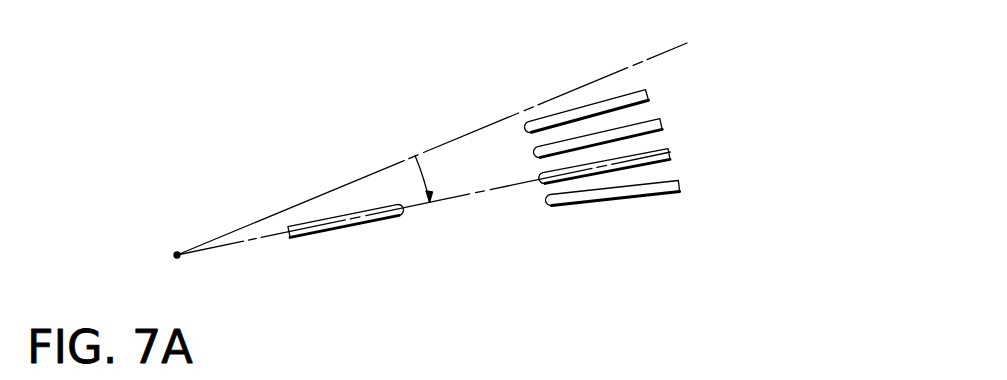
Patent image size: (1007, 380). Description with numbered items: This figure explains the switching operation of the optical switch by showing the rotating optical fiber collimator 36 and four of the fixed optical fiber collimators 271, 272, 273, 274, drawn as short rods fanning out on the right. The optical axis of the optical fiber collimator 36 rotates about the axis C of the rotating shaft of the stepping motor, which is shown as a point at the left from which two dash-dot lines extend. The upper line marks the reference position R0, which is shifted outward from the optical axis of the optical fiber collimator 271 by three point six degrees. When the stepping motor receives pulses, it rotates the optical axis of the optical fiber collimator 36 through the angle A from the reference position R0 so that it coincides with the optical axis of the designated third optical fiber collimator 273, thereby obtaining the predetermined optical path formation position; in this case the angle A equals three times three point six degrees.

The axis C is at (178, 272).
The reference position R0 is at (520, 140).
The angle A is at (427, 170).
The optical fiber collimator 36 is at (369, 223).
The optical fiber collimator 271 is at (578, 103).
The optical fiber collimator 272 is at (648, 115).
The third optical fiber collimator 273 is at (667, 148).
The optical fiber collimator 274 is at (630, 200).